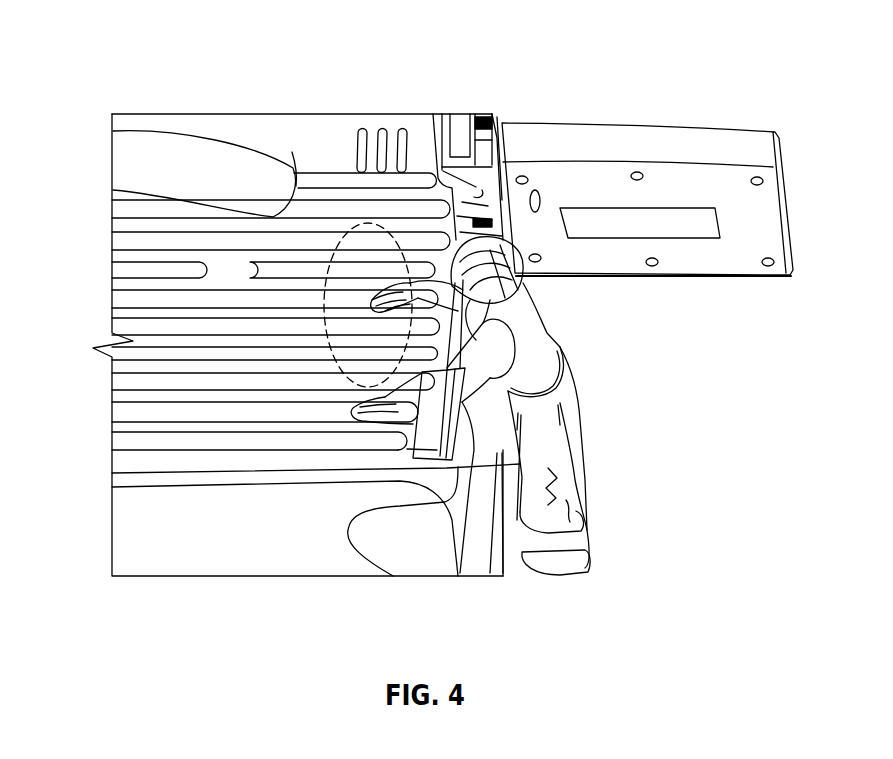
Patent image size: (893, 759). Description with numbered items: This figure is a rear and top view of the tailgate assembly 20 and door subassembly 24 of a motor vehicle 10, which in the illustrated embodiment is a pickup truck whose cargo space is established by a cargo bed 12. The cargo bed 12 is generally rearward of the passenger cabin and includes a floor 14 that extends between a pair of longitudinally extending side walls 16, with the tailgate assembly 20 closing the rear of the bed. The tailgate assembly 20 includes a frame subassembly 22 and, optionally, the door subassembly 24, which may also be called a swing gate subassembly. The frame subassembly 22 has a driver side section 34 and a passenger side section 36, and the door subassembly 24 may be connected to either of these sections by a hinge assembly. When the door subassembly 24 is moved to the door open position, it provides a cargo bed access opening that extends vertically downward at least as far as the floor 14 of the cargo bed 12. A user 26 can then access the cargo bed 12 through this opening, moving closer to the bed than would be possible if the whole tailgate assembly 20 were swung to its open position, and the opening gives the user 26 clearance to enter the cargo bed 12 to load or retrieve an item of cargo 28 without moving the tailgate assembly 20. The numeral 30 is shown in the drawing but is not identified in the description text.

The motor vehicle 10 is at (123, 49).
The cargo bed 12 is at (312, 205).
The floor 14 is at (125, 383).
The side walls 16 is at (355, 113).
The tailgate assembly 20 is at (488, 113).
The frame subassembly 22 is at (480, 126).
The door subassembly 24 is at (712, 140).
The user 26 is at (568, 375).
The item of cargo 28 is at (372, 270).
The bracket 30 is at (498, 216).
The driver side section 34 is at (455, 467).
The passenger side section 36 is at (487, 149).